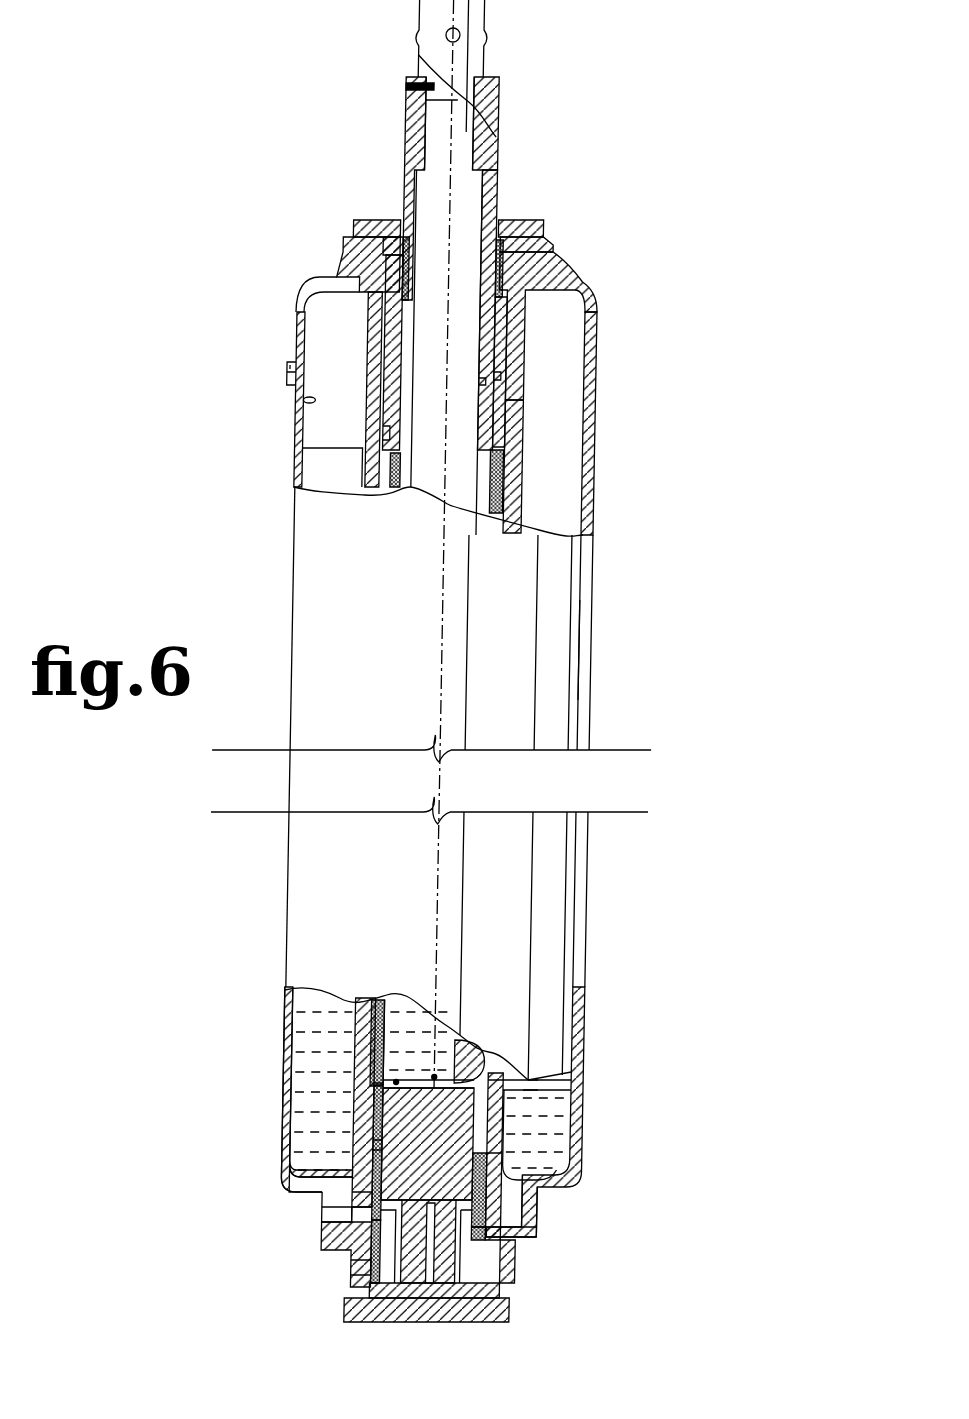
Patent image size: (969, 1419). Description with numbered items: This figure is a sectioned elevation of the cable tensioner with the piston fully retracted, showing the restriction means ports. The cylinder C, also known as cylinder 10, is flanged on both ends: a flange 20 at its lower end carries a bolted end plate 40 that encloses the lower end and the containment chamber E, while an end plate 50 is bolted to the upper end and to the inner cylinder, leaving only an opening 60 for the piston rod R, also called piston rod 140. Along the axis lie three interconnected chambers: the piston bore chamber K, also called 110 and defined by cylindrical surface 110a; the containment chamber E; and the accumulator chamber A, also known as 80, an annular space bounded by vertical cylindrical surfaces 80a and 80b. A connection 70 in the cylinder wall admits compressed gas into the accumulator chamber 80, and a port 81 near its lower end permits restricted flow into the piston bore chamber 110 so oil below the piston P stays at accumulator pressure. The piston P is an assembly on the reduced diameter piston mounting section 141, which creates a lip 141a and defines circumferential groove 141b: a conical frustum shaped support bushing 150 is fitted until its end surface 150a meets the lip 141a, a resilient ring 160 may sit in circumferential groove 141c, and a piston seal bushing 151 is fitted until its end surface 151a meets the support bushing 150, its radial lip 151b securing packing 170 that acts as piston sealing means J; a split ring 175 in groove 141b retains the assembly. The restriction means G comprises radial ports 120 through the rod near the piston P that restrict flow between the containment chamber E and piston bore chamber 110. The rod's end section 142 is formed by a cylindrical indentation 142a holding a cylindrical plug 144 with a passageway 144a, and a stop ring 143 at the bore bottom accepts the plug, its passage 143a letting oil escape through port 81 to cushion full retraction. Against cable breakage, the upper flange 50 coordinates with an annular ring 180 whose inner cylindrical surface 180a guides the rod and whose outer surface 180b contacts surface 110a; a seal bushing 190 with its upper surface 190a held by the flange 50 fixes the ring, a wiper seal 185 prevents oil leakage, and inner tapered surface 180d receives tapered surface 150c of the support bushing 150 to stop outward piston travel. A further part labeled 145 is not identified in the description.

The piston rod R is at (500, 42).
The piston rod 140 is at (408, 118).
The end plate 50 is at (352, 233).
The opening 60 is at (386, 237).
The wiper seal 185 is at (352, 262).
The upper surface 190a is at (550, 246).
The seal bushing 190 is at (510, 340).
The piston bore chamber 110 is at (513, 477).
The cylindrical surface 110a is at (497, 530).
The annular ring 180 is at (503, 417).
The inner cylindrical surface 180a is at (490, 382).
The outer surface 180b is at (497, 380).
The inner tapered surface 180d is at (487, 432).
The accumulator chamber 80 is at (322, 422).
The vertical cylindrical surface 80a is at (304, 400).
The vertical cylindrical surface 80b is at (363, 448).
The connection 70 is at (290, 375).
The cylinder 10 is at (588, 715).
The cylinder C is at (600, 648).
The accumulator chamber A is at (560, 520).
The containment chamber E is at (434, 265).
The piston P is at (438, 1127).
The piston bore chamber K is at (390, 1010).
The restriction means G is at (395, 1082).
The piston sealing means J is at (367, 1192).
The radial ports 120 is at (435, 1077).
The reduced diameter piston mounting section 141 is at (385, 1100).
The lip 141a is at (380, 1083).
The circumferential groove 141b is at (490, 1240).
The circumferential groove 141c is at (493, 1133).
The support bushing 150 is at (497, 1100).
The end surface 150a is at (530, 1080).
The tapered surface 150c is at (363, 1115).
The resilient ring 160 is at (530, 1107).
The piston seal bushing 151 is at (380, 1150).
The end surface 151a is at (377, 1140).
The radial lip 151b is at (500, 1153).
The packing 170 is at (533, 1203).
The port 81 is at (530, 1233).
The split ring 175 is at (353, 1222).
The flange 20 is at (328, 1243).
The cap passage 145 is at (360, 1275).
The end section 142 is at (352, 1255).
The cylindrical indentation 142a is at (352, 1285).
The stop ring 143 is at (485, 1275).
The passage 143a is at (517, 1247).
The cylindrical plug 144 is at (445, 1325).
The passageway 144a is at (418, 1325).
The end plate 40 is at (505, 1320).